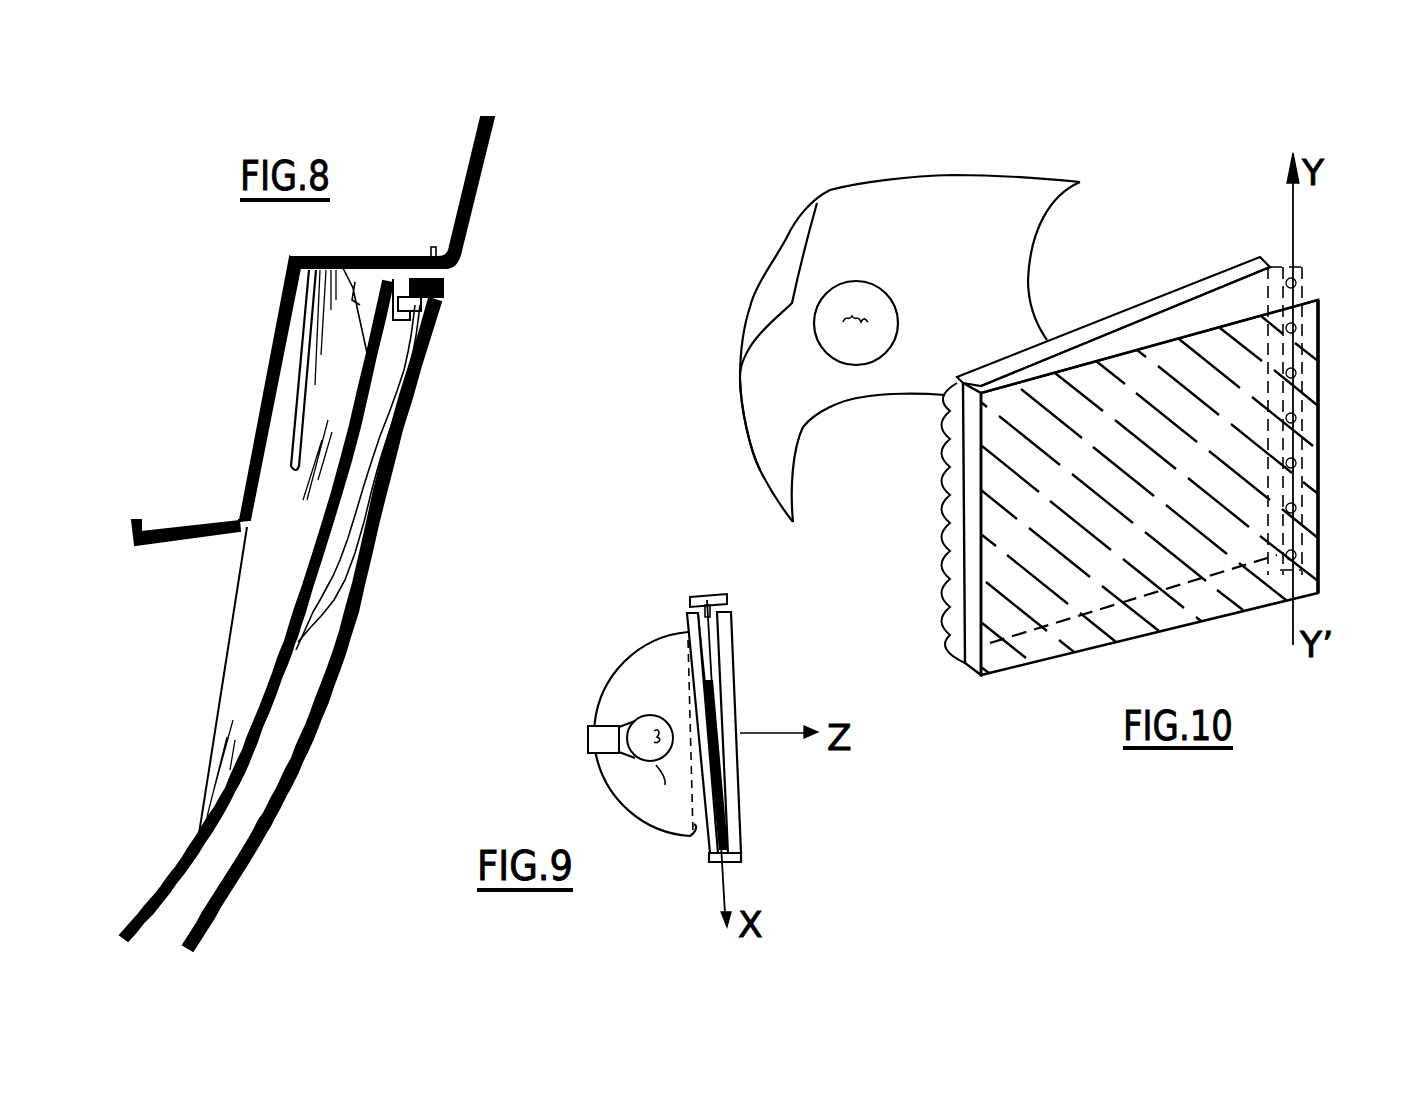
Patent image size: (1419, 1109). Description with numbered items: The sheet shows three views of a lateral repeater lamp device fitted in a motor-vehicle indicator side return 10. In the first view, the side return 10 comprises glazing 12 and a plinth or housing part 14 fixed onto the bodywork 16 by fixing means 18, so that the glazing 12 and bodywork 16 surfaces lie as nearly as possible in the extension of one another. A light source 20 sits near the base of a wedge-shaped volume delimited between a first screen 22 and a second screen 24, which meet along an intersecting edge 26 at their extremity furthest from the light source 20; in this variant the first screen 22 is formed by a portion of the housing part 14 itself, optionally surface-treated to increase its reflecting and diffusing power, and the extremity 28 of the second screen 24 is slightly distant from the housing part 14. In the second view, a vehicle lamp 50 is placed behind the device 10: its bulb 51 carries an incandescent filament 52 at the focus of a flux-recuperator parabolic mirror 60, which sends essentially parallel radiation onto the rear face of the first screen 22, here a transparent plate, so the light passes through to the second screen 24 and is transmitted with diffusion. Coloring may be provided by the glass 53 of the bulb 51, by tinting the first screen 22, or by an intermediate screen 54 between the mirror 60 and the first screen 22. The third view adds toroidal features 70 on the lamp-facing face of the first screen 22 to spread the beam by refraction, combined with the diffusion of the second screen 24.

In FIG. 8, the side return 10 is at (333, 602).
In FIG. 9, the side return 10 is at (735, 704).
In FIG. 10, the side return 10 is at (1172, 460).
In FIG. 8, the glazing 12 is at (357, 628).
In FIG. 8, the plinth or housing part 14 is at (310, 611).
In FIG. 8, the motor-vehicle bodywork 16 is at (463, 210).
In FIG. 8, the fixing means 18 is at (273, 485).
In FIG. 8, the light source 20 is at (383, 300).
In FIG. 9, the light source 20 is at (708, 595).
In FIG. 10, the light source 20 is at (1296, 508).
In FIG. 8, the first screen 22 is at (343, 485).
In FIG. 9, the first screen 22 is at (687, 627).
In FIG. 10, the first screen 22 is at (1230, 273).
In FIG. 8, the second screen 24 is at (383, 437).
In FIG. 9, the second screen 24 is at (730, 617).
In FIG. 10, the second screen 24 is at (1187, 333).
In FIG. 8, the intersecting edge 26 is at (305, 642).
In FIG. 8, the extremity of the second screen 28 is at (320, 612).
In FIG. 9, the vehicle lamp 50 is at (603, 756).
In FIG. 10, the vehicle lamp 50 is at (842, 348).
In FIG. 9, the bulb 51 is at (656, 765).
In FIG. 10, the bulb 51 is at (897, 305).
In FIG. 9, the incandescent filament 52 is at (650, 758).
In FIG. 10, the incandescent filament 52 is at (855, 320).
In FIG. 9, the glass of the bulb 53 is at (639, 718).
In FIG. 9, the intermediate screen 54 is at (695, 835).
In FIG. 9, the flux-recuperator parabolic mirror 60 is at (667, 800).
In FIG. 10, the flux-recuperator parabolic mirror 60 is at (762, 428).
In FIG. 10, the toroidal features 70 is at (935, 548).